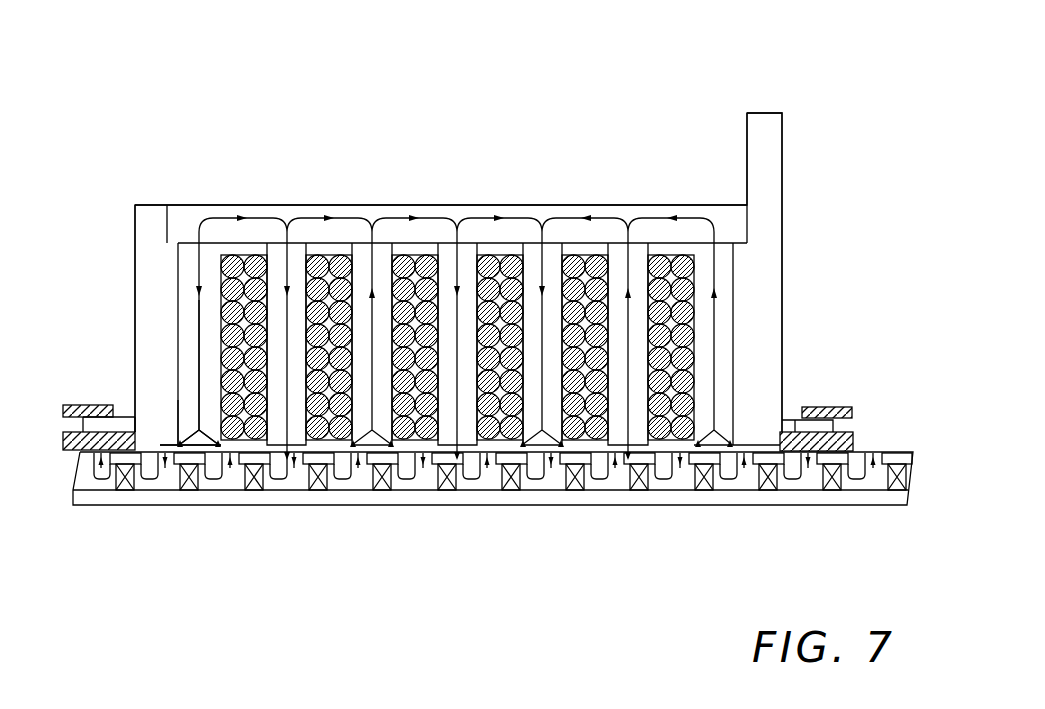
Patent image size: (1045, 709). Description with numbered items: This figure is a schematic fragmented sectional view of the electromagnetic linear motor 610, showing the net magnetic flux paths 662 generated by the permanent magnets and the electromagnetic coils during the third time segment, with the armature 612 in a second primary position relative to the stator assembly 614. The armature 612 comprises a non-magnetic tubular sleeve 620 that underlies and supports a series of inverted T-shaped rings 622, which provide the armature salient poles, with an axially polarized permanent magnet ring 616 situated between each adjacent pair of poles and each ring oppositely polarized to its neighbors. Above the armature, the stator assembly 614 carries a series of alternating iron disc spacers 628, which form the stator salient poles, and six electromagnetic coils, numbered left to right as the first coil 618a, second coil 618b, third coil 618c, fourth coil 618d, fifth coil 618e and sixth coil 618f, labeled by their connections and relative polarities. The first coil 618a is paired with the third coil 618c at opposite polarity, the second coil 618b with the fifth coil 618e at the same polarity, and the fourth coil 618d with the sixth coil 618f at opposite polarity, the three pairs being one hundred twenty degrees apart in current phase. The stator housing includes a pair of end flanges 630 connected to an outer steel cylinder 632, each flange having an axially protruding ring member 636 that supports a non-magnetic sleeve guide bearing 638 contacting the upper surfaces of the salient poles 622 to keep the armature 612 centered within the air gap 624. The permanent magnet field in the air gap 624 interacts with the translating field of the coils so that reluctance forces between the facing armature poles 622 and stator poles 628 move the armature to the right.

The electromagnetic linear motor 610 is at (727, 78).
The armature 612 is at (170, 510).
The stator assembly 614 is at (234, 204).
The permanent magnet rings 616 is at (130, 493).
The first electromagnetic coil 618a is at (266, 250).
The second electromagnetic coil 618b is at (351, 250).
The third electromagnetic coil 618c is at (437, 250).
The fourth electromagnetic coil 618d is at (522, 250).
The fifth electromagnetic coil 618e is at (607, 250).
The sixth electromagnetic coil 618f is at (694, 250).
The non-magnetic tubular sleeve 620 is at (765, 507).
The inverted T-shaped rings 622 is at (352, 503).
The air gap 624 is at (150, 448).
The iron disc spacers 628 is at (190, 257).
The end flanges 630 is at (135, 265).
The outer steel cylinder 632 is at (731, 205).
The axially protruding ring member 636 is at (123, 422).
The sleeve guide bearing 638 is at (63, 440).
The flux paths 662 is at (262, 207).